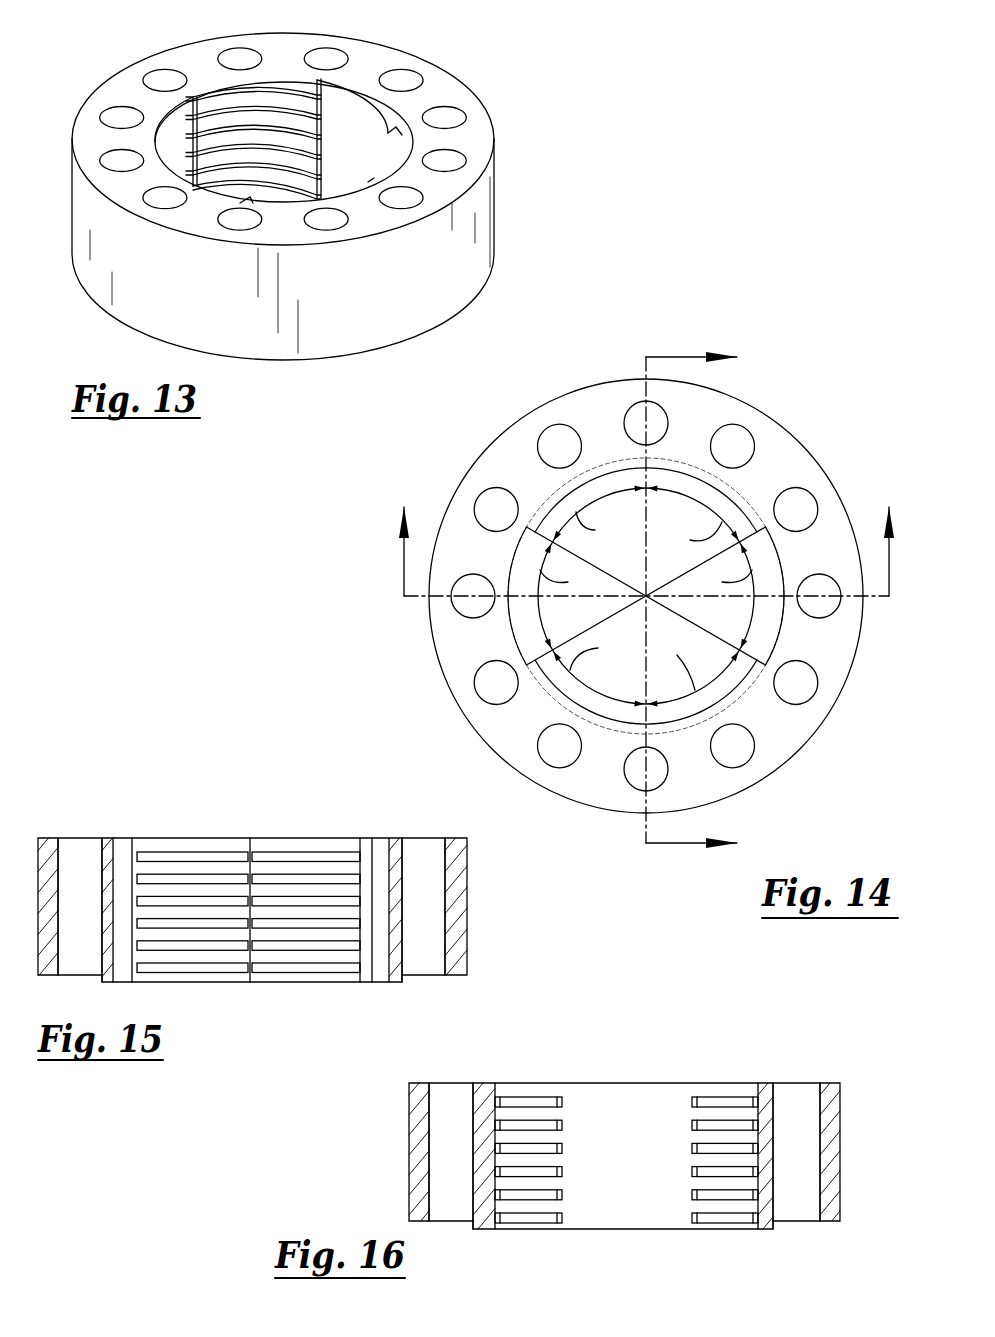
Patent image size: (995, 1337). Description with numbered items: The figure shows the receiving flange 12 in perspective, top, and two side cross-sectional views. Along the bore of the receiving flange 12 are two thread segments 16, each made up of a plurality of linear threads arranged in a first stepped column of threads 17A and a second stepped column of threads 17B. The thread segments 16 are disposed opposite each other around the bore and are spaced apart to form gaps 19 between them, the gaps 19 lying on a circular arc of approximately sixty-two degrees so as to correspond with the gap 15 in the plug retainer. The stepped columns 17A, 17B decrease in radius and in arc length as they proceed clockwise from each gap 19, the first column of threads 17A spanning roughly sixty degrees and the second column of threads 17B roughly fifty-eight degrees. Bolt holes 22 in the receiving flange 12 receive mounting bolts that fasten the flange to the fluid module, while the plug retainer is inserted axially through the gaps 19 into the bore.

In FIG. 13, the receiving flange 12 is at (378, 304).
In FIG. 14, the receiving flange 12 is at (727, 786).
In FIG. 15, the receiving flange 12 is at (252, 910).
In FIG. 16, the receiving flange 12 is at (412, 1128).
In FIG. 13, the first stepped column of threads 17A is at (187, 77).
In FIG. 14, the first stepped column of threads 17A is at (600, 475).
In FIG. 15, the first stepped column of threads 17A is at (173, 877).
In FIG. 16, the first stepped column of threads 17A is at (755, 1125).
In FIG. 13, the second stepped column of threads 17B is at (247, 107).
In FIG. 14, the second stepped column of threads 17B is at (712, 495).
In FIG. 15, the second stepped column of threads 17B is at (325, 878).
In FIG. 16, the second stepped column of threads 17B is at (498, 1127).
In FIG. 13, the gaps 19 is at (370, 110).
In FIG. 14, the gaps 19 is at (517, 622).
In FIG. 16, the gaps 19 is at (633, 1113).
In FIG. 13, the bolt holes 22 is at (112, 113).
In FIG. 14, the bolt holes 22 is at (487, 505).
In FIG. 15, the bolt holes 22 is at (78, 857).
In FIG. 16, the bolt holes 22 is at (797, 1117).
In FIG. 14, the gap 15 is at (642, 551).
In FIG. 14, the thread segments 16 is at (691, 601).
In FIG. 15, the thread segments 16 is at (240, 848).